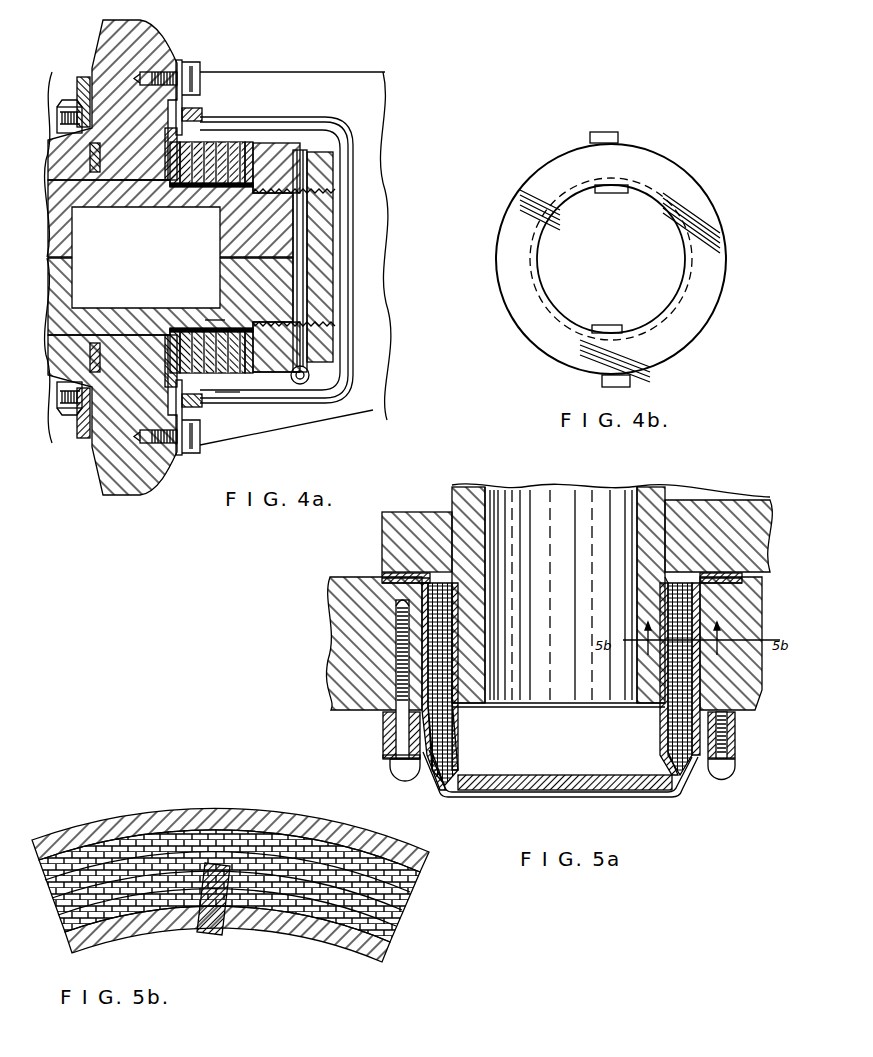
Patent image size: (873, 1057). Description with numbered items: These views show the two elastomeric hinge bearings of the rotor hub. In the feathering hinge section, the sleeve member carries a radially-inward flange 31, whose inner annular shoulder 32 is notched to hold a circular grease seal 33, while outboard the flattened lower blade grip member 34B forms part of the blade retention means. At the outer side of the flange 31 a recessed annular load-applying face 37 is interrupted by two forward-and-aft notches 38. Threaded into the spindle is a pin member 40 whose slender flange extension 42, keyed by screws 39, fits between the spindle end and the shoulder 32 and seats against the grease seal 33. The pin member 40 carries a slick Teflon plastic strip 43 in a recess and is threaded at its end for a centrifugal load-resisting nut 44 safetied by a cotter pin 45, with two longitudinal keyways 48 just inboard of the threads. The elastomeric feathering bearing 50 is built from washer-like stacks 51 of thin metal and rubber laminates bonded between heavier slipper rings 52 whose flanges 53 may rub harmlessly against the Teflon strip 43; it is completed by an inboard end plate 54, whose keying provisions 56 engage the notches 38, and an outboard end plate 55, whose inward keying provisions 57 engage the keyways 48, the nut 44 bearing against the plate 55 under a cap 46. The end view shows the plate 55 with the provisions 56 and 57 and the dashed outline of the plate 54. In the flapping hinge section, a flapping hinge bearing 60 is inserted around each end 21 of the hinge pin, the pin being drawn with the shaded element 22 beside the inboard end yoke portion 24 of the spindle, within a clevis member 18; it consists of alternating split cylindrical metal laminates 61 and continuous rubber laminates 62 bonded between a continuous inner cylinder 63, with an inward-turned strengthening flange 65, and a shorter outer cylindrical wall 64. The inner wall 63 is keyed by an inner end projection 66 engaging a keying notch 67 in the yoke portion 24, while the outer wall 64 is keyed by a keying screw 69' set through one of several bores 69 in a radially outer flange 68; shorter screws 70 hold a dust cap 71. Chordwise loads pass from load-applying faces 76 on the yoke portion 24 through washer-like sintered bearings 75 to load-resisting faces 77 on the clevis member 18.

In FIG. 4A, the radially-inward flange 31 is at (125, 50).
In FIG. 4A, the flange extension 42 is at (82, 82).
In FIG. 4A, the screws 39 is at (60, 114).
In FIG. 4A, the annular shoulder 32 is at (92, 152).
In FIG. 4A, the grease seal 33 is at (62, 179).
In FIG. 4A, the notches 38 is at (176, 112).
In FIG. 4A, the load-applying face 37 is at (165, 135).
In FIG. 4A, the inboard end plate 54 is at (170, 160).
In FIG. 4B, the inboard end plate 54 is at (688, 240).
In FIG. 4A, the keying provisions 56 is at (195, 112).
In FIG. 4B, the keying provisions 56 is at (618, 136).
In FIG. 4A, the elastomeric feathering bearing 50 is at (225, 138).
In FIG. 4B, the elastomeric feathering bearing 50 is at (540, 356).
In FIG. 4A, the outboard end plate 55 is at (256, 150).
In FIG. 4B, the outboard end plate 55 is at (668, 165).
In FIG. 4A, the cap 46 is at (310, 118).
In FIG. 4A, the lower blade grip member 34B is at (292, 70).
In FIG. 4A, the flanges of slipper rings 53 is at (190, 195).
In FIG. 4A, the keyways 48 is at (212, 190).
In FIG. 4A, the keying provisions 57 is at (245, 195).
In FIG. 4B, the keying provisions 57 is at (622, 193).
In FIG. 4A, the Teflon plastic strip 43 is at (205, 320).
In FIG. 4A, the pin member 40 is at (60, 358).
In FIG. 4A, the centrifugal load-resisting nut 44 is at (325, 350).
In FIG. 4A, the slipper rings 52 is at (225, 398).
In FIG. 4A, the washer-like stacks 51 is at (255, 378).
In FIG. 4A, the cotter pin 45 is at (318, 415).
In FIG. 5A, the inboard end yoke portion 24 is at (425, 515).
In FIG. 5A, the shaft 22 is at (470, 548).
In FIG. 5A, the pin ends 21 is at (495, 672).
In FIG. 5A, the forward-and-aft load-applying faces 76 is at (390, 575).
In FIG. 5A, the sintered bearings 75 is at (385, 578).
In FIG. 5A, the forward-and-aft load-resisting faces 77 is at (385, 580).
In FIG. 5A, the clevis member 18 is at (328, 648).
In FIG. 5A, the outer cylindrical wall 64 is at (422, 640).
In FIG. 5B, the outer cylindrical wall 64 is at (70, 838).
In FIG. 5A, the radially outer flange 68 is at (383, 725).
In FIG. 5A, the bores 69 is at (384, 750).
In FIG. 5A, the keying screw 69' is at (384, 770).
In FIG. 5A, the inner cylinder 63 is at (460, 742).
In FIG. 5B, the inner cylinder 63 is at (320, 935).
In FIG. 5A, the strengthening flange 65 is at (480, 778).
In FIG. 5A, the flapping hinge bearing 60 is at (660, 730).
In FIG. 5B, the flapping hinge bearing 60 is at (183, 808).
In FIG. 5A, the keying notch 67 is at (680, 512).
In FIG. 5A, the inner end projection 66 is at (660, 575).
In FIG. 5A, the screws 70 is at (725, 775).
In FIG. 5A, the dust cap 71 is at (640, 798).
In FIG. 5B, the rubber laminates 62 is at (268, 860).
In FIG. 5B, the split cylindrical metal laminates 61 is at (362, 862).